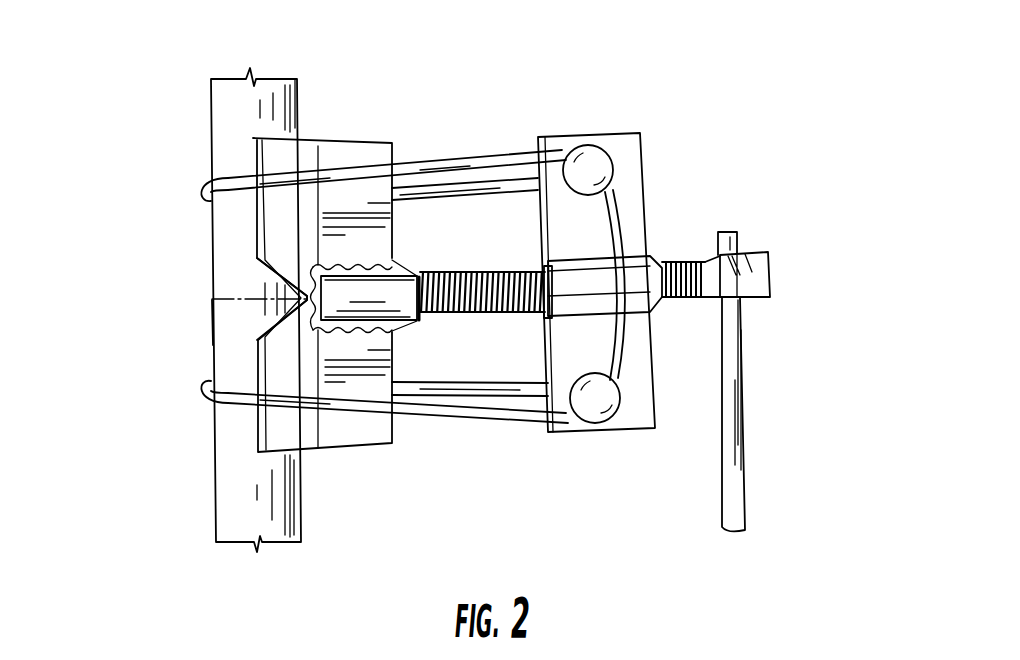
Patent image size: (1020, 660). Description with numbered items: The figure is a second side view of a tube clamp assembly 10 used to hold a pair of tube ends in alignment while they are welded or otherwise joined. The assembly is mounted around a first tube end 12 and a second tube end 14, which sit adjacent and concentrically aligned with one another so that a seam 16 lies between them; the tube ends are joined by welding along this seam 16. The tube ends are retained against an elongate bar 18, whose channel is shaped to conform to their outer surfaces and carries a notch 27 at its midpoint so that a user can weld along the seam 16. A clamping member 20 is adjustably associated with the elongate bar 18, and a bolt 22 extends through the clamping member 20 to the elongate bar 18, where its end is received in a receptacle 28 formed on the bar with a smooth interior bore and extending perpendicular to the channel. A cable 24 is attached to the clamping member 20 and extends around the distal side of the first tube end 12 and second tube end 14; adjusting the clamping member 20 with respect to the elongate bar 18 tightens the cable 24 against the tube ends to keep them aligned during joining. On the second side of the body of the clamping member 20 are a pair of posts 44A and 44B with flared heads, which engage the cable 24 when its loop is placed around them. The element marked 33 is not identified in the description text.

The tube clamp assembly 10 is at (441, 271).
The first tube end 12 is at (212, 284).
The second tube end 14 is at (212, 322).
The seam 16 is at (212, 299).
The elongate bar 18 is at (350, 140).
The clamping member 20 is at (612, 134).
The bolt 22 is at (786, 258).
The cable 24 is at (495, 158).
The notch 27 is at (305, 298).
The receptacle 28 is at (412, 320).
The threaded screw and collar 33 is at (645, 248).
The post 44A is at (585, 146).
The post 44B is at (609, 424).